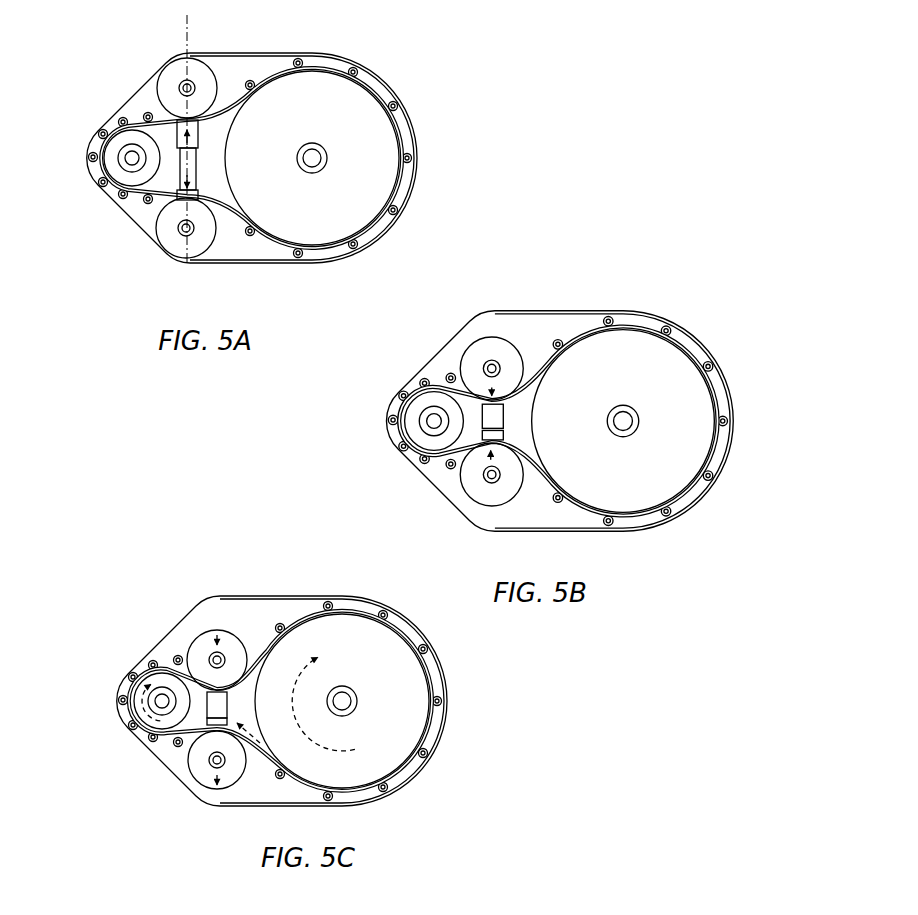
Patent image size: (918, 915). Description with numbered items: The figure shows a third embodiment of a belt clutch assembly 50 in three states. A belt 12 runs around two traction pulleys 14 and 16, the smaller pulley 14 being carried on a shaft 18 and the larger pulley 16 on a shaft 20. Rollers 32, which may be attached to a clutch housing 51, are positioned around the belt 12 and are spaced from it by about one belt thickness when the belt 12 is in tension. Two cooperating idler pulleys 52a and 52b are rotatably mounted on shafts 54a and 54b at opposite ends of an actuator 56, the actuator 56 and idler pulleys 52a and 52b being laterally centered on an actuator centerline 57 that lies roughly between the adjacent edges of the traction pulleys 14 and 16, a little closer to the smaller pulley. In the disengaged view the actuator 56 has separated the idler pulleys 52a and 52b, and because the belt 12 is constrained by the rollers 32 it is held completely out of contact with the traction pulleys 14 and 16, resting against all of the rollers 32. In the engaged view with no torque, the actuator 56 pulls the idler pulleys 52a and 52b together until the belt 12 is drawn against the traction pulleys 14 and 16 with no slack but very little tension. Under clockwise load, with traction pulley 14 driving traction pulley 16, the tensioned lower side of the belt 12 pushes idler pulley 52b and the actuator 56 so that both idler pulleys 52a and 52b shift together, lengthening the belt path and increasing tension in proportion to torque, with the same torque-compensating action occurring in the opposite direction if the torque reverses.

In FIG. 5A, the belt 12 is at (251, 162).
In FIG. 5B, the belt 12 is at (558, 416).
In FIG. 5C, the belt 12 is at (280, 707).
In FIG. 5A, the traction pulley 14 is at (132, 158).
In FIG. 5B, the traction pulley 14 is at (434, 420).
In FIG. 5C, the traction pulley 14 is at (162, 701).
In FIG. 5A, the traction pulley 16 is at (312, 158).
In FIG. 5B, the traction pulley 16 is at (623, 421).
In FIG. 5C, the traction pulley 16 is at (342, 701).
In FIG. 5A, the shaft 18 is at (145, 164).
In FIG. 5B, the shaft 18 is at (449, 425).
In FIG. 5C, the shaft 18 is at (177, 707).
In FIG. 5A, the shaft 20 is at (323, 167).
In FIG. 5B, the shaft 20 is at (635, 431).
In FIG. 5C, the shaft 20 is at (358, 710).
In FIG. 5A, the rollers 32 is at (250, 162).
In FIG. 5B, the rollers 32 is at (563, 424).
In FIG. 5C, the rollers 32 is at (282, 701).
In FIG. 5A, the belt clutch assembly 50 is at (267, 155).
In FIG. 5B, the belt clutch assembly 50 is at (563, 374).
In FIG. 5C, the belt clutch assembly 50 is at (282, 670).
In FIG. 5A, the clutch housing 51 is at (252, 158).
In FIG. 5B, the clutch housing 51 is at (559, 421).
In FIG. 5C, the clutch housing 51 is at (282, 701).
In FIG. 5A, the idler pulley 52a is at (190, 121).
In FIG. 5B, the idler pulley 52a is at (475, 382).
In FIG. 5C, the idler pulley 52a is at (219, 661).
In FIG. 5A, the idler pulley 52b is at (190, 198).
In FIG. 5B, the idler pulley 52b is at (508, 474).
In FIG. 5C, the idler pulley 52b is at (219, 757).
In FIG. 5A, the shaft 54a is at (192, 72).
In FIG. 5B, the shaft 54a is at (491, 356).
In FIG. 5C, the shaft 54a is at (217, 645).
In FIG. 5A, the shaft 54b is at (167, 238).
In FIG. 5B, the shaft 54b is at (481, 494).
In FIG. 5C, the shaft 54b is at (208, 778).
In FIG. 5A, the actuator 56 is at (199, 160).
In FIG. 5B, the actuator 56 is at (505, 422).
In FIG. 5C, the actuator 56 is at (231, 706).
In FIG. 5A, the actuator centerline 57 is at (165, 140).